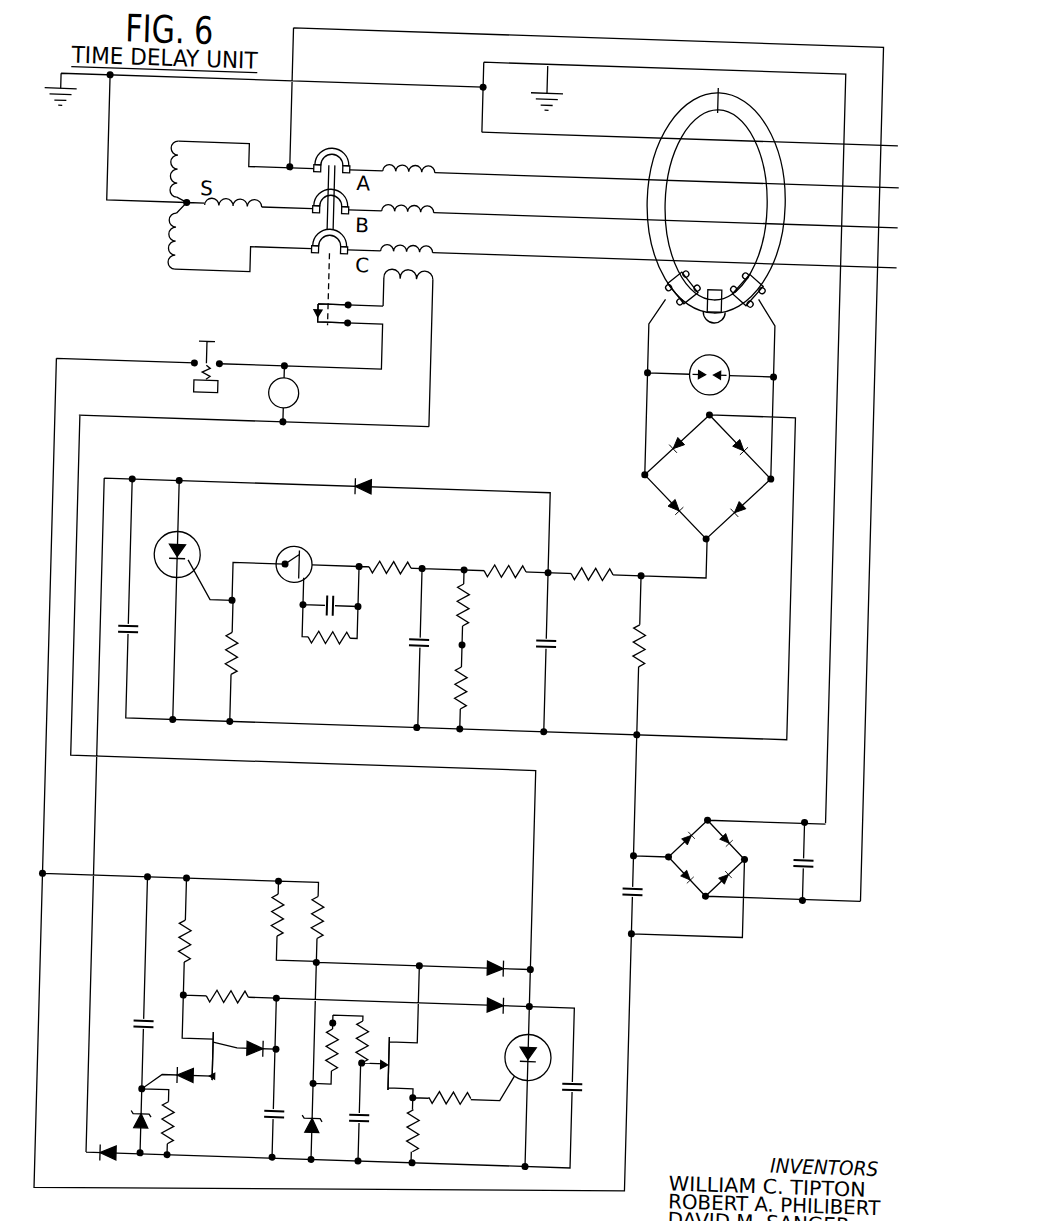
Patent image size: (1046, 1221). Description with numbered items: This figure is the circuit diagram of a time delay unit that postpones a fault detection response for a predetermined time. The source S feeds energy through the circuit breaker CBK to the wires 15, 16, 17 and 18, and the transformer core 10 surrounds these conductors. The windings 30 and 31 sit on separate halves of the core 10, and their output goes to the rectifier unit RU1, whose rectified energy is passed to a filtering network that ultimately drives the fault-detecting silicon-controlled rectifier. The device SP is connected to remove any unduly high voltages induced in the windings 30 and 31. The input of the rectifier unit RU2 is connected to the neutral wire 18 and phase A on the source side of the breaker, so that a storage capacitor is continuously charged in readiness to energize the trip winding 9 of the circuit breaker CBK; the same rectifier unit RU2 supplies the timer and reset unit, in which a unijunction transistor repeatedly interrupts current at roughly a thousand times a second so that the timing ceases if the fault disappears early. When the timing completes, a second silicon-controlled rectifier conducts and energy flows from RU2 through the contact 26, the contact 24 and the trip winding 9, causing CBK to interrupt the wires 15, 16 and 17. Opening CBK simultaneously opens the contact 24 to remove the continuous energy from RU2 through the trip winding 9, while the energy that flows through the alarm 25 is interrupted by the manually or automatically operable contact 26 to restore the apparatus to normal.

The trip winding 9 is at (399, 288).
The core 10 is at (751, 116).
The wire 15 is at (576, 246).
The wire 16 is at (576, 206).
The wire 17 is at (576, 166).
The neutral wire 18 is at (577, 126).
The contact 24 is at (324, 331).
The alarm 25 is at (294, 401).
The contact 26 is at (208, 353).
The winding 30 is at (665, 286).
The winding 31 is at (749, 286).
The circuit breaker CBK is at (348, 187).
The surge protection device SP is at (714, 358).
The rectifier unit RU1 is at (707, 477).
The rectifier unit RU2 is at (710, 858).